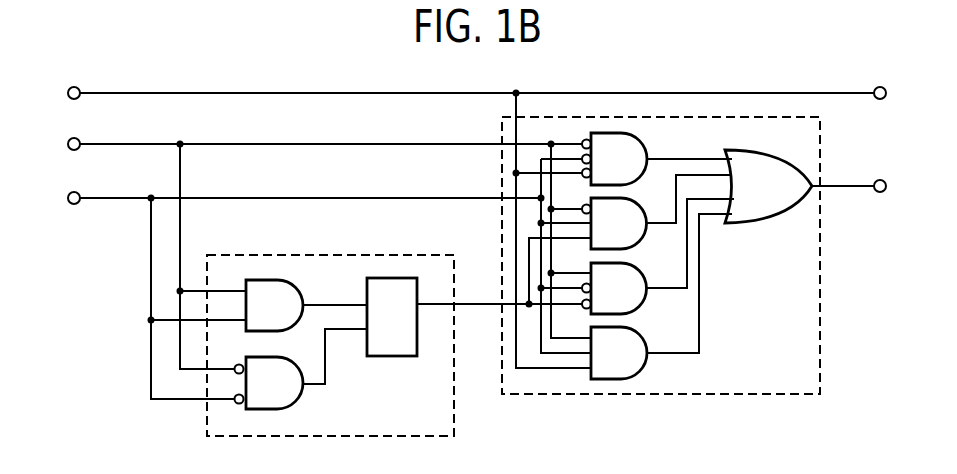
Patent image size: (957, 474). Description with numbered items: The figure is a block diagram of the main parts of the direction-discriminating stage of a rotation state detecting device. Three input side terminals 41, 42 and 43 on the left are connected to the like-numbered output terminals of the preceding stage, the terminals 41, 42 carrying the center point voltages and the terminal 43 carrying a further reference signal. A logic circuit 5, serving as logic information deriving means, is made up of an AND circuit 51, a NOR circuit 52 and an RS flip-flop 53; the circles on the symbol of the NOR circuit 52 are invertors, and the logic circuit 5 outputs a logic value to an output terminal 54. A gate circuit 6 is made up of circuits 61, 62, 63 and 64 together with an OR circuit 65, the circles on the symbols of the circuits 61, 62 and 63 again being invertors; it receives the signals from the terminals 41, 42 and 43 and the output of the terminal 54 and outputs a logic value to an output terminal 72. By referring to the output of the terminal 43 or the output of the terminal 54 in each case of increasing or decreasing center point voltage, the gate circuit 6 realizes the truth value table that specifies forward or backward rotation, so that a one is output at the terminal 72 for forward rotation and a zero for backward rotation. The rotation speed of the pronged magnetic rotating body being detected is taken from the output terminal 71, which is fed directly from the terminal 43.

The input side terminal 41 is at (72, 137).
The input side terminal 42 is at (74, 205).
The input side terminal 43 is at (72, 86).
The logic circuit 5 is at (454, 420).
The AND circuit 51 is at (303, 283).
The NOR circuit 52 is at (303, 406).
The RS flip-flop 53 is at (393, 356).
The output terminal 54 is at (475, 302).
The gate circuit 6 is at (697, 394).
The circuit 61 is at (650, 142).
The circuit 62 is at (648, 214).
The circuit 63 is at (648, 280).
The circuit 64 is at (646, 340).
The OR circuit 65 is at (743, 224).
The output terminal 71 is at (881, 86).
The output terminal 72 is at (881, 179).